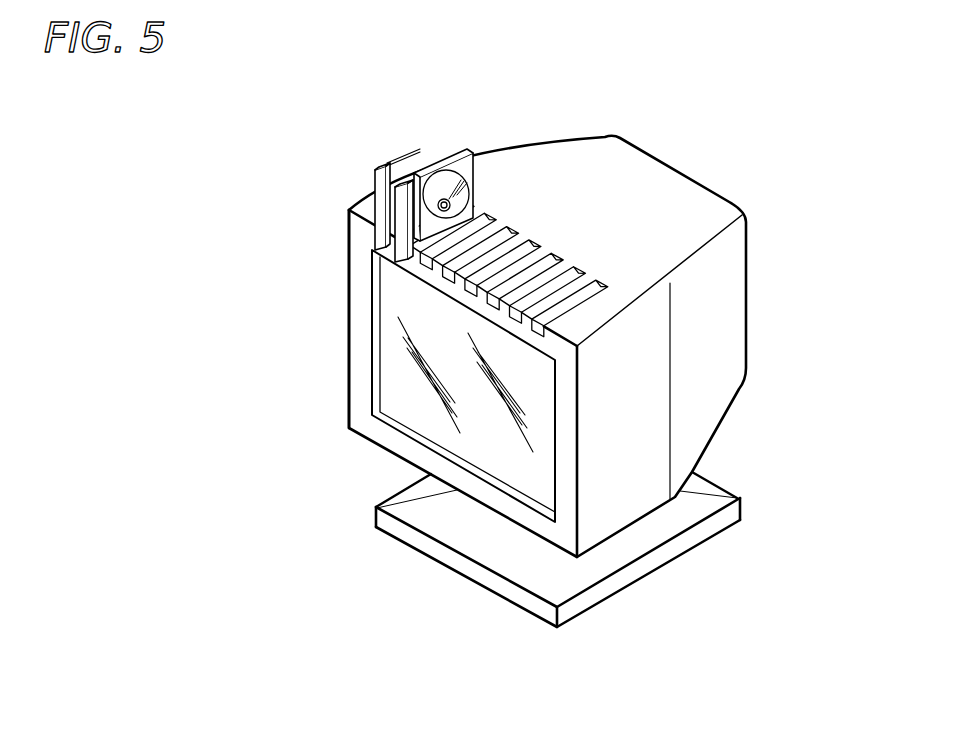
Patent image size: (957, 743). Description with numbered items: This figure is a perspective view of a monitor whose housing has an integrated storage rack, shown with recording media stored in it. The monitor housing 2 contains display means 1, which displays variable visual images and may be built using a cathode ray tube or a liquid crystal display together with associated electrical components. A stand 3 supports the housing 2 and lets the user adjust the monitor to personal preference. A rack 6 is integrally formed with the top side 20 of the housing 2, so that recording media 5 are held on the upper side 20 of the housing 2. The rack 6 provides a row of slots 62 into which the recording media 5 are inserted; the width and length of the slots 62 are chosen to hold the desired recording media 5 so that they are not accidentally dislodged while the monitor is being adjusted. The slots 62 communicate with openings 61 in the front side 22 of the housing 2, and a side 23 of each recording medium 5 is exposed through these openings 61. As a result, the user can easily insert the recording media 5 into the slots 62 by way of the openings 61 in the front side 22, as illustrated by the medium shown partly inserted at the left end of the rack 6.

The display means 1 is at (387, 358).
The monitor housing 2 is at (747, 339).
The stand 3 is at (708, 503).
The recording media 5 is at (390, 163).
The rack 6 is at (520, 206).
The top side 20 is at (643, 278).
The front side 22 is at (356, 420).
The side of recording media 23 is at (378, 193).
The openings 61 is at (425, 240).
The slots 62 is at (600, 290).